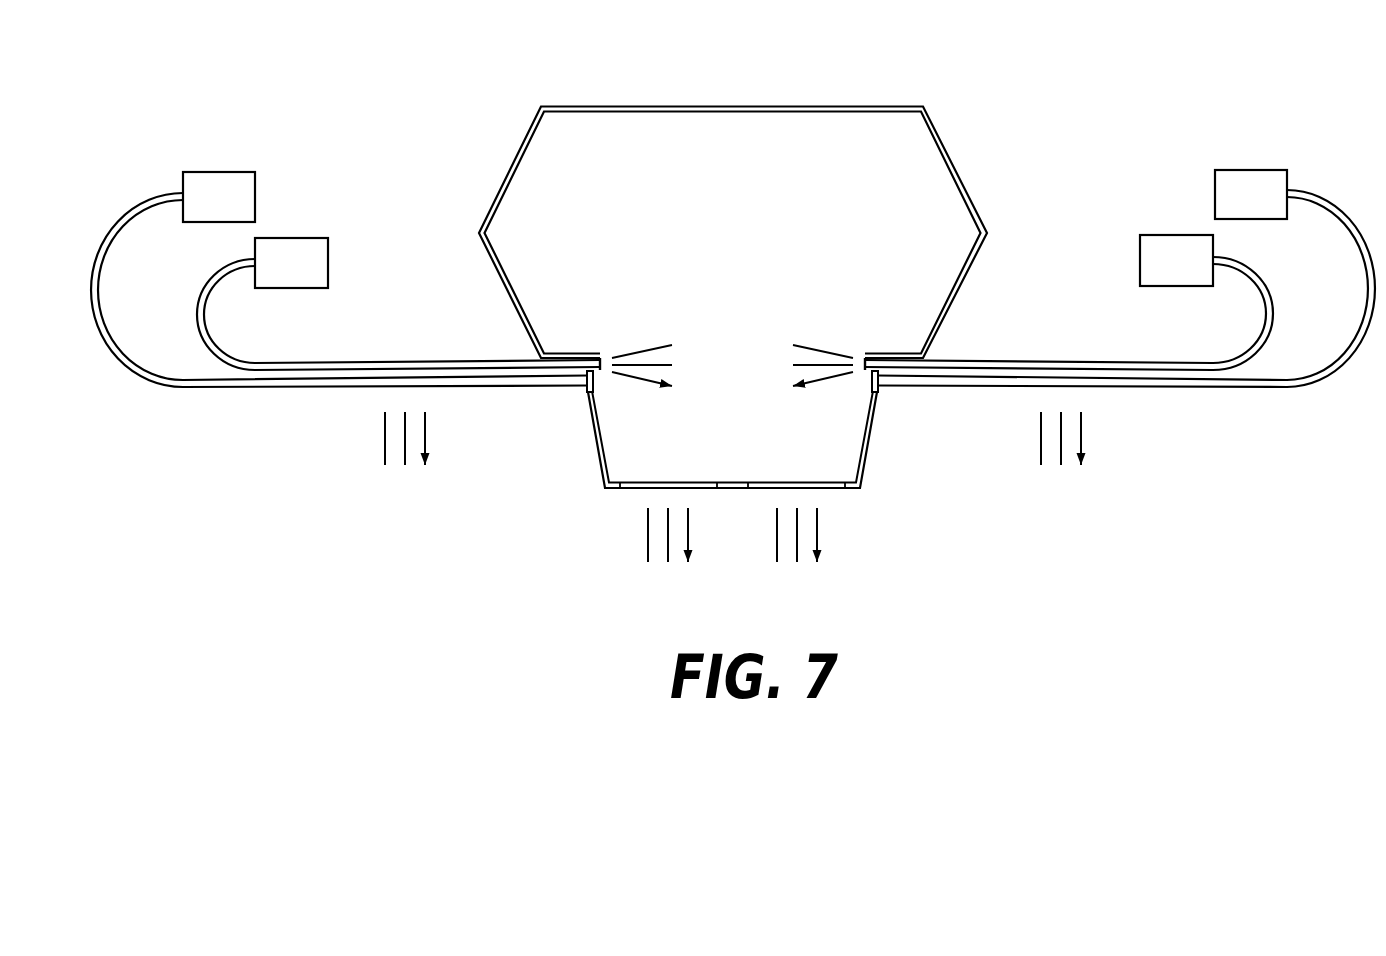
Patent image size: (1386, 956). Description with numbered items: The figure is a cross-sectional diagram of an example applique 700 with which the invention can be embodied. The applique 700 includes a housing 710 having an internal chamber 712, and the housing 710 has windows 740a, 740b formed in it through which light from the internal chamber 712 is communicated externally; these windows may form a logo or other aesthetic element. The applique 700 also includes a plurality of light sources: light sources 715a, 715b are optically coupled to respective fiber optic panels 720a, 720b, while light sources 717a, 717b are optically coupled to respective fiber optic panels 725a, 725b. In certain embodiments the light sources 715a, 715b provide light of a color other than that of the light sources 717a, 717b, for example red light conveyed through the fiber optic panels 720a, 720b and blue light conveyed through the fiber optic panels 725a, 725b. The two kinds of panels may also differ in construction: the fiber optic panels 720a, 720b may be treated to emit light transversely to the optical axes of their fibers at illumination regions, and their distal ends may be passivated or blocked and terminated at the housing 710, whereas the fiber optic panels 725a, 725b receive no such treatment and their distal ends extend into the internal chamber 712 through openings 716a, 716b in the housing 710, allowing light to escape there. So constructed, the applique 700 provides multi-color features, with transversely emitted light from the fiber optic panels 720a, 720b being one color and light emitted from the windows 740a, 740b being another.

The applique 700 is at (458, 152).
The housing 710 is at (687, 105).
The internal chamber 712 is at (733, 189).
The light source 715a is at (246, 172).
The light source 715b is at (1223, 168).
The light source 717a is at (310, 238).
The light source 717b is at (1158, 235).
The opening 716a is at (601, 354).
The opening 716b is at (863, 354).
The fiber optic panel 720a is at (326, 388).
The fiber optic panel 720b is at (1150, 387).
The fiber optic panel 725a is at (420, 362).
The fiber optic panel 725b is at (1040, 360).
The window 740a is at (670, 481).
The window 740b is at (783, 481).